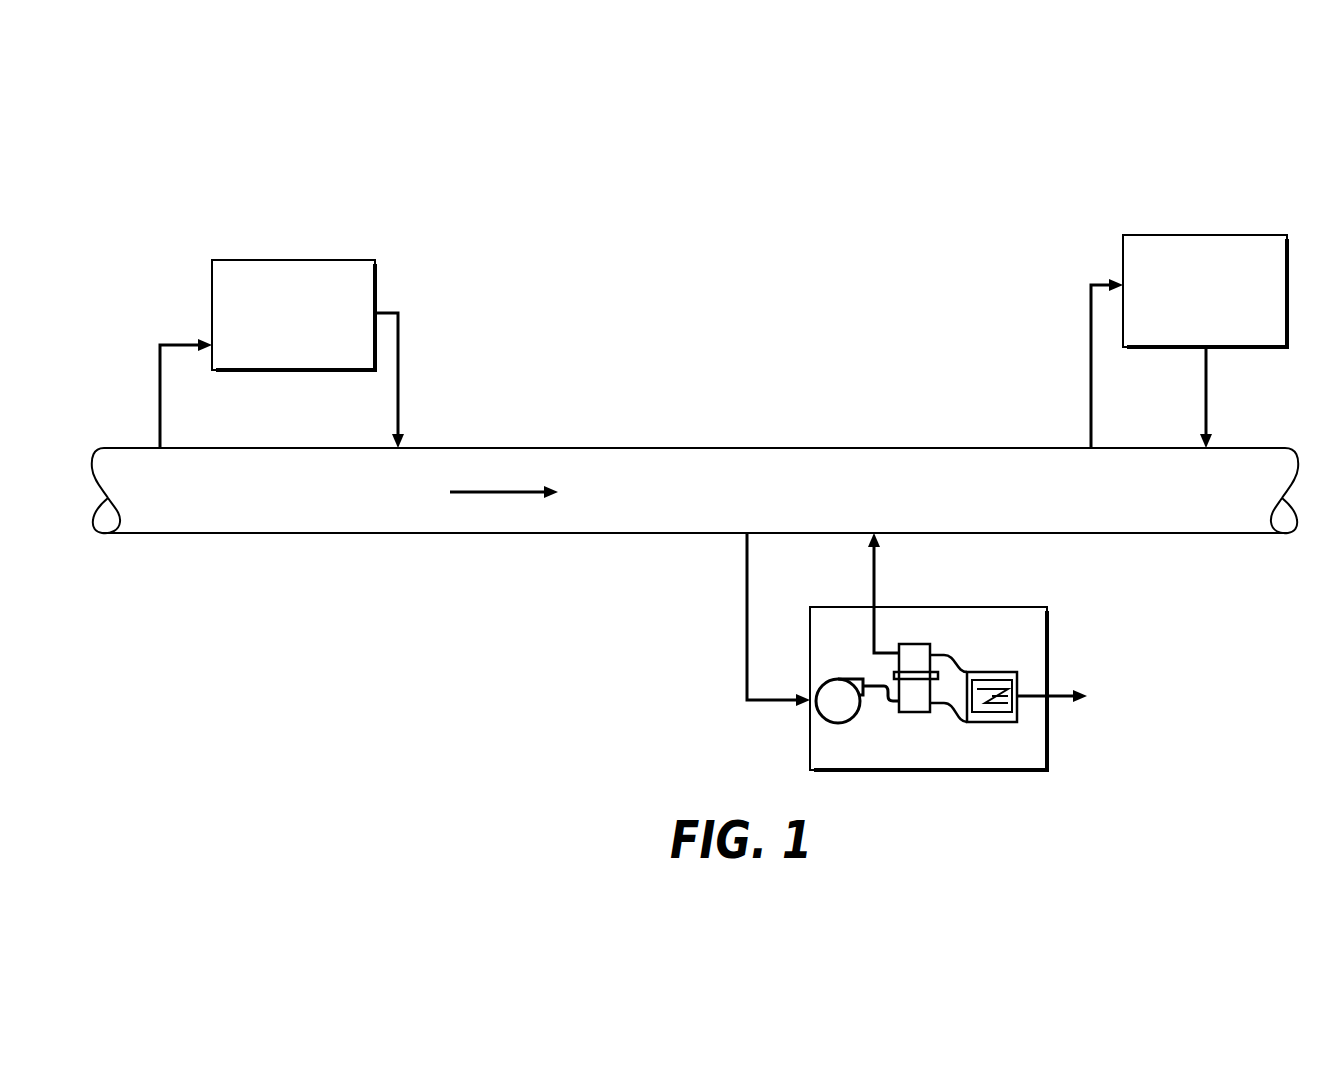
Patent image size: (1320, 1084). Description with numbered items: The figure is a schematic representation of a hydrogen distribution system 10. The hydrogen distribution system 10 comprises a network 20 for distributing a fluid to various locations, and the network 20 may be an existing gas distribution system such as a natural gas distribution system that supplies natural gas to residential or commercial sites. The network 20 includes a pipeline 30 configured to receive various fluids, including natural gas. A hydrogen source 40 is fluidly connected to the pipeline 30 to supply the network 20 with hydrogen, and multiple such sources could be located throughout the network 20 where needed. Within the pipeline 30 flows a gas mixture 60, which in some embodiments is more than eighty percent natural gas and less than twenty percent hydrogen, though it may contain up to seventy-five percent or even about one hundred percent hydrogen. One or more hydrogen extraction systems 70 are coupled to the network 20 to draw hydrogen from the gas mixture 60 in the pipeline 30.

The hydrogen distribution system 10 is at (1115, 139).
The network 20 is at (398, 183).
The pipeline 30 is at (520, 540).
The hydrogen source 40 is at (281, 327).
The gas mixture 60 is at (597, 506).
The hydrogen extraction system 70 is at (1192, 304).